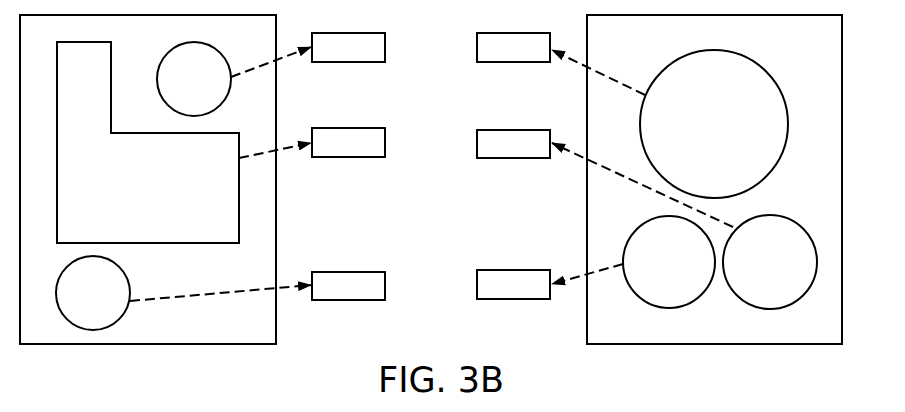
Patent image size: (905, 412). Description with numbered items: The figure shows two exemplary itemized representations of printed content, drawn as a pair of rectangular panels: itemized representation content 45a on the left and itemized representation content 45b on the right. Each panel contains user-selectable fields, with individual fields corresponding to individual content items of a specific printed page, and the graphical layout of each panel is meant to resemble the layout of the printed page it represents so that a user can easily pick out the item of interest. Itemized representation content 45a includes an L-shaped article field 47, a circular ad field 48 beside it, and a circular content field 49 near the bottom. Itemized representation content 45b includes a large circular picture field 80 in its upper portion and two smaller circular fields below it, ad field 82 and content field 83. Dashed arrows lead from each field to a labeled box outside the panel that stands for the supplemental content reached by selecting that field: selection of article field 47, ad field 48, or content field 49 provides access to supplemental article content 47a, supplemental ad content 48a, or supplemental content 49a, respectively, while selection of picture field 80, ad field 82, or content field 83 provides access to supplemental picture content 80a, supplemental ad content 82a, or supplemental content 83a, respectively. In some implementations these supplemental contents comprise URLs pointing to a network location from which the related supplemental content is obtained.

The itemized representation content 45a is at (148, 200).
The itemized representation content 45b is at (714, 200).
The article field 47 is at (148, 142).
The ad field 48 is at (194, 79).
The content field 49 is at (93, 293).
The supplemental article content 47a is at (312, 143).
The supplemental ad content 48a is at (308, 55).
The supplemental content 49a is at (257, 286).
The picture field 80 is at (714, 124).
The ad field 82 is at (669, 262).
The content field 83 is at (770, 262).
The supplemental picture content 80a is at (561, 64).
The supplemental ad content 82a is at (550, 281).
The supplemental content 83a is at (605, 178).